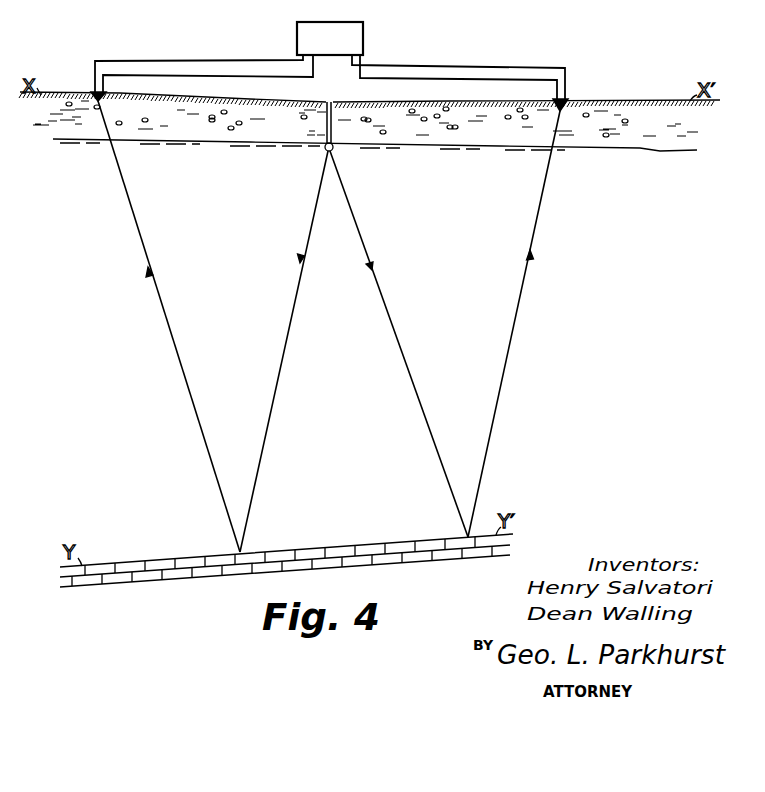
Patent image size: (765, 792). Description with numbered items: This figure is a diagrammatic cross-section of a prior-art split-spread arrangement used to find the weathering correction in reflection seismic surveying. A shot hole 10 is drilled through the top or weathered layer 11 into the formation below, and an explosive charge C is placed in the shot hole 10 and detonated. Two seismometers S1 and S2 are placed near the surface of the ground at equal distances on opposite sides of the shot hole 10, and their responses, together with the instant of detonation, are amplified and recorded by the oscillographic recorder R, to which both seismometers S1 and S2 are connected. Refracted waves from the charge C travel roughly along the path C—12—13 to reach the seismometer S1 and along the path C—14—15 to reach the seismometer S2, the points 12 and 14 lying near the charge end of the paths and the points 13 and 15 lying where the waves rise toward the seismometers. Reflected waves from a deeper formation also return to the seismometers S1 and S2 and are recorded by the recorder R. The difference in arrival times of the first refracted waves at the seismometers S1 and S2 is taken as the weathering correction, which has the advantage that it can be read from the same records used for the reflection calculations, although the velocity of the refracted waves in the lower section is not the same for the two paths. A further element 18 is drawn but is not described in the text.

The shot hole 10 is at (342, 88).
The weathered layer 11 is at (612, 120).
The point on refracted wave path to first seismometer 12 is at (110, 143).
The point on refracted wave path to first seismometer 13 is at (106, 98).
The point on refracted wave path to second seismometer 14 is at (547, 149).
The point on refracted wave path to second seismometer 15 is at (568, 107).
The base of weathered layer 18 is at (610, 170).
The explosive charge C is at (333, 150).
The oscillographic recorder R is at (330, 38).
The seismometer S1 is at (93, 90).
The seismometer S2 is at (565, 97).